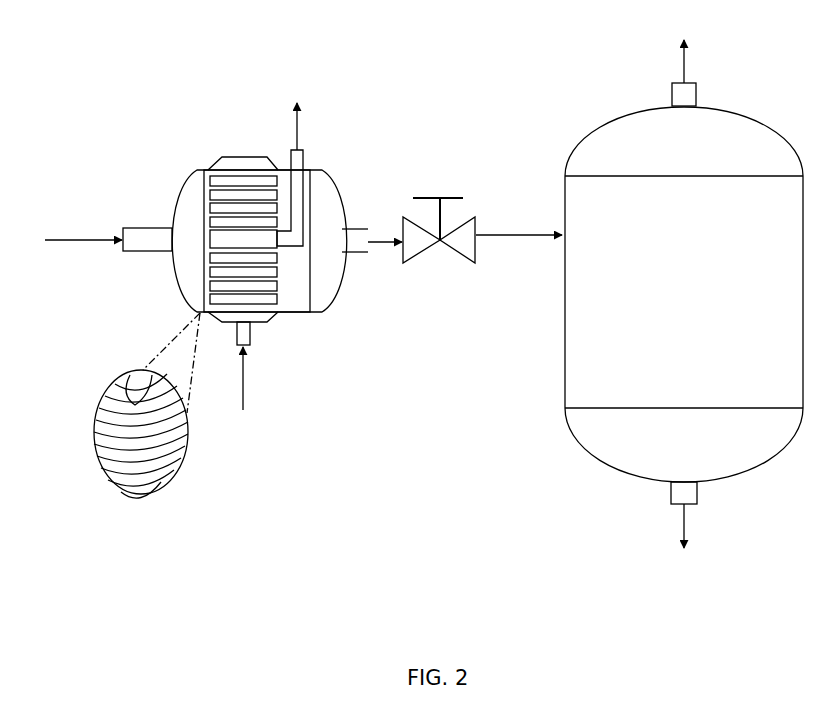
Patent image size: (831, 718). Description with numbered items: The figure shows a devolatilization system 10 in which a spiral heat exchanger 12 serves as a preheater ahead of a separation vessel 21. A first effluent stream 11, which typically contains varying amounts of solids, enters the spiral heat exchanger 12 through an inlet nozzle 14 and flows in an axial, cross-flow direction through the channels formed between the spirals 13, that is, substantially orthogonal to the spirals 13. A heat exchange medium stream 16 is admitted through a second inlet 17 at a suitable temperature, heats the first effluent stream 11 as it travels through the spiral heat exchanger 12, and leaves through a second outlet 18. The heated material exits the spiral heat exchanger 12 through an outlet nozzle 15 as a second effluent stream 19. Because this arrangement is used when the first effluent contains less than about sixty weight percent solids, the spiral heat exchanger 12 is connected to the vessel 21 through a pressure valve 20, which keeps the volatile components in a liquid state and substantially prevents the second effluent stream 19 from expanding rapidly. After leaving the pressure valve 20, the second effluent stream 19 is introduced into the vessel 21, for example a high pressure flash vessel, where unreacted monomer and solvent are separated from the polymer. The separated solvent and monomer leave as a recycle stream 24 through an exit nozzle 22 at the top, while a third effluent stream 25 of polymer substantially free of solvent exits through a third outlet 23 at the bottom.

The system 10 is at (50, 140).
The first effluent stream 11 is at (71, 242).
The spiral heat exchanger 12 is at (187, 203).
The spirals 13 is at (180, 442).
The inlet nozzle 14 is at (143, 235).
The outlet nozzle 15 is at (352, 240).
The heat exchange medium stream 16 is at (270, 253).
The second inlet 17 is at (246, 332).
The second outlet 18 is at (293, 155).
The second effluent stream 19 is at (465, 253).
The pressure valve 20 is at (427, 243).
The vessel 21 is at (590, 363).
The exit nozzle 22 is at (682, 100).
The third outlet 23 is at (683, 497).
The recycle stream 24 is at (682, 53).
The third effluent stream 25 is at (687, 540).